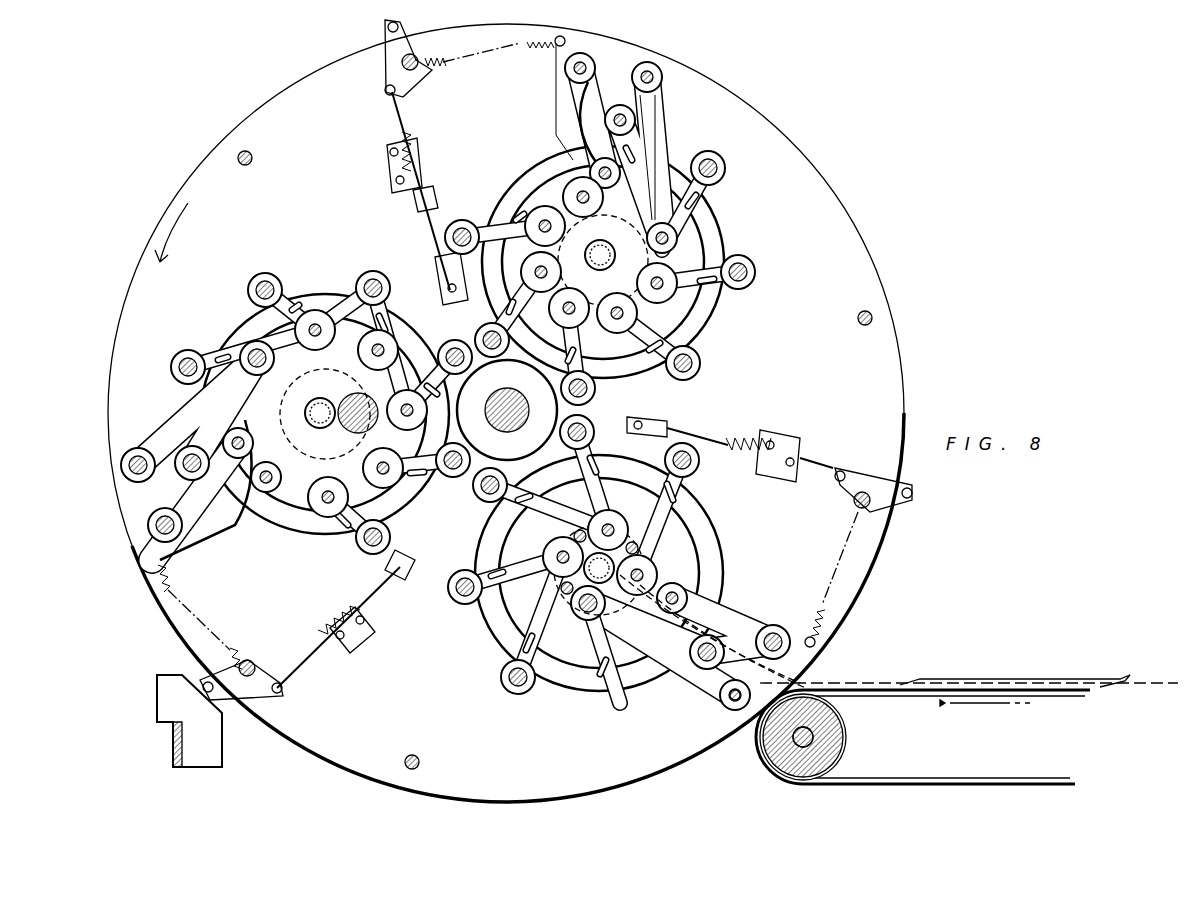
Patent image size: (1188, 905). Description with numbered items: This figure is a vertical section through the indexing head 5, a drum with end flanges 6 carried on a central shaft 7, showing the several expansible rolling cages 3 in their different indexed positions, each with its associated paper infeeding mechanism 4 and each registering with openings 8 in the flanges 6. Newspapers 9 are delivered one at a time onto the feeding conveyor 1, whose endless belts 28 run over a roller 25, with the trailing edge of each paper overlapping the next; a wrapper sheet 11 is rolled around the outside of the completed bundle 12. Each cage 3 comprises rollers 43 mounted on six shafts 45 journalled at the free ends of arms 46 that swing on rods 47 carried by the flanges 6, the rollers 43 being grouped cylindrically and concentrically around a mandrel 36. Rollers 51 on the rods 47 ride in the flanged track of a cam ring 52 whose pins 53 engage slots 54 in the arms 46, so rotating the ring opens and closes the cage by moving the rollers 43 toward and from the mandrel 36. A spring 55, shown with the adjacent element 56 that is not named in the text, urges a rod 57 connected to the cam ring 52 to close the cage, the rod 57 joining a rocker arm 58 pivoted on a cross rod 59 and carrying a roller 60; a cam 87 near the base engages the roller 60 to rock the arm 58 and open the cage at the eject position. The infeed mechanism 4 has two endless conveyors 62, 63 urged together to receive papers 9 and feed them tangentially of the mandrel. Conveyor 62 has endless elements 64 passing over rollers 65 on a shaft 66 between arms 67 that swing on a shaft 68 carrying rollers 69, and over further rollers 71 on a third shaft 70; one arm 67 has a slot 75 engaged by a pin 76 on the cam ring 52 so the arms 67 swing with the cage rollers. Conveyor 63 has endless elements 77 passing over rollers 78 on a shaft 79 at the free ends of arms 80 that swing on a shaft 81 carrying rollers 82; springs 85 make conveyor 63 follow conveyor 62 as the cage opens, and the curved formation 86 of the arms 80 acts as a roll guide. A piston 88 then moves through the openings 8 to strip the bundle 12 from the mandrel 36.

The paper or sheet feeding conveyor 1 is at (883, 808).
The expansible paper or sheet rolling cage 3 is at (716, 534).
The paper infeeding mechanism 4 is at (785, 571).
The indexing head 5 is at (893, 212).
The end flanges 6 is at (836, 221).
The central shaft 7 is at (498, 430).
The openings 8 is at (517, 588).
The newspapers 9 is at (895, 684).
The wrapper sheet 11 is at (525, 182).
The completed bundle 12 is at (594, 222).
The roller 25 is at (825, 752).
The endless belts 28 is at (900, 778).
The mandrel 36 is at (612, 262).
The rollers 43 is at (322, 318).
The shaft 45 is at (305, 325).
The arms 46 is at (600, 492).
The rods 47 is at (488, 495).
The rollers 51 is at (262, 280).
The cam ring 52 is at (322, 305).
The pins 53 is at (300, 300).
The slots 54 is at (310, 300).
The spring 55 is at (325, 620).
The bracket 56 is at (352, 638).
The rod 57 is at (375, 580).
The rocker arm 58 is at (262, 675).
The cross rod 59 is at (247, 678).
The roller 60 is at (205, 680).
The endless conveyor 62 is at (680, 704).
The endless conveyor 63 is at (761, 609).
The endless belt or spring elements 64 is at (720, 695).
The rollers 65 is at (590, 612).
The shaft 66 is at (615, 612).
The arms 67 is at (652, 650).
The shaft 68 is at (708, 660).
The rollers 69 is at (780, 668).
The third shaft 70 is at (732, 705).
The rollers 71 is at (740, 708).
The slot 75 is at (690, 625).
The pin 76 is at (705, 615).
The endless belt or spring elements 77 is at (600, 103).
The rollers 78 is at (597, 165).
The shaft 79 is at (600, 172).
The arms 80 is at (572, 80).
The shaft 81 is at (566, 40).
The rollers 82 is at (585, 66).
The springs 85 is at (430, 66).
The curved formation 86 is at (695, 205).
The cam 87 is at (182, 700).
The piston 88 is at (356, 430).